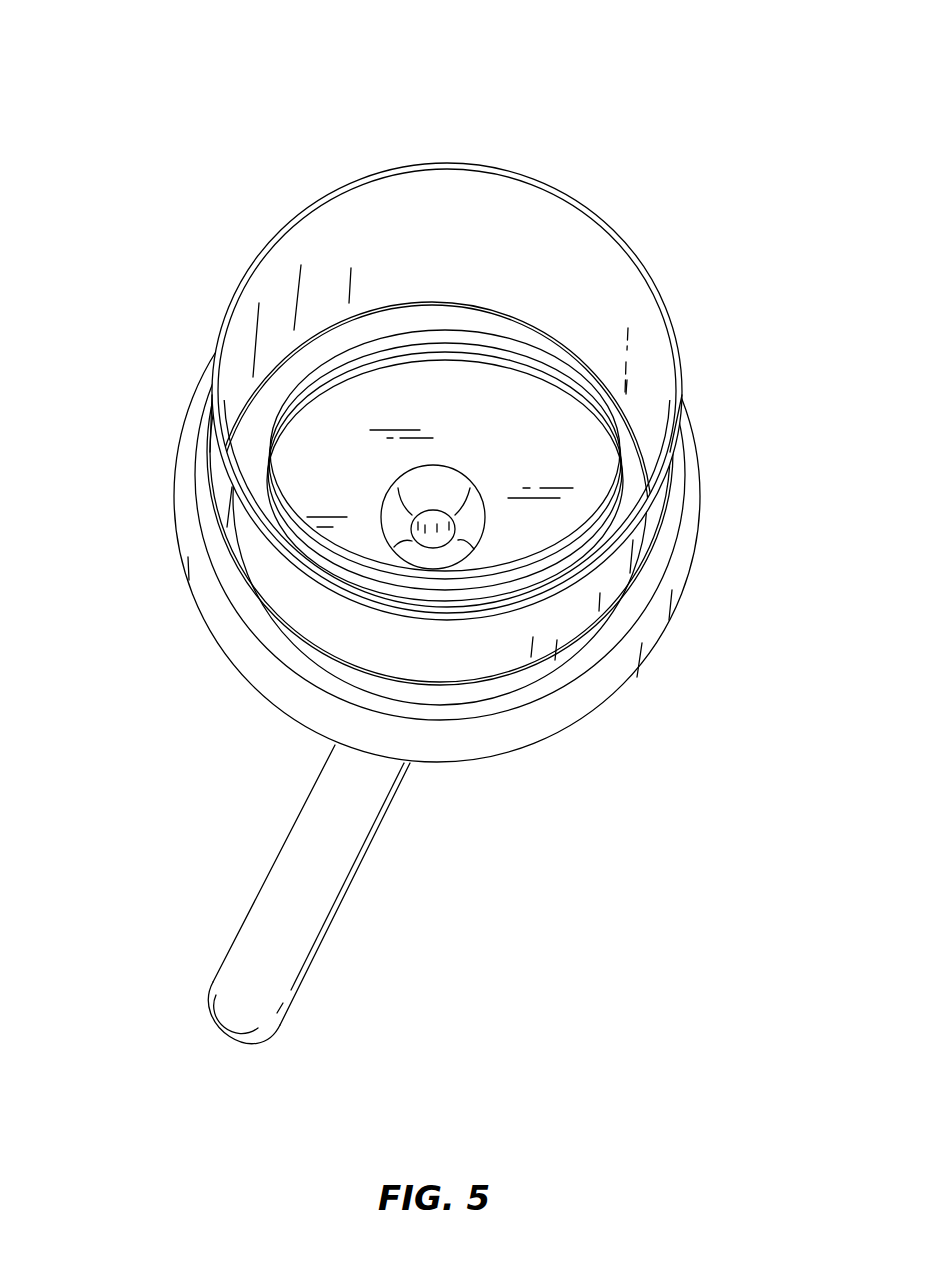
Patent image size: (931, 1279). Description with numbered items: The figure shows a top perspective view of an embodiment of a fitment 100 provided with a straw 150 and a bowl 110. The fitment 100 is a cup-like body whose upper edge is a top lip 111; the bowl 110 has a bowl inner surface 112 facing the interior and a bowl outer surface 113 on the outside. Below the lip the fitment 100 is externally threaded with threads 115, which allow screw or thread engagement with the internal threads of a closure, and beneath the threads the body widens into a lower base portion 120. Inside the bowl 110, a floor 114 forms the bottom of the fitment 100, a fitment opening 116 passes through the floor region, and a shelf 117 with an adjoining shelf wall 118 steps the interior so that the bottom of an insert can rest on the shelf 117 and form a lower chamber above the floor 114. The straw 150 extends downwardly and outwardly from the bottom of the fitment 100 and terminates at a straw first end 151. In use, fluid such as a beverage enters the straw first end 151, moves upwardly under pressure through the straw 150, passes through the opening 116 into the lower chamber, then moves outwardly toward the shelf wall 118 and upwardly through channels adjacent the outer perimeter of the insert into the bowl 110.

The fitment 100 is at (134, 96).
The bowl 110 is at (613, 572).
The top lip 111 is at (562, 198).
The bowl inner surface 112 is at (630, 312).
The bowl outer surface 113 is at (648, 523).
The floor 114 is at (322, 468).
The threads 115 is at (618, 621).
The fitment opening 116 is at (445, 508).
The shelf 117 is at (370, 325).
The shelf wall 118 is at (578, 428).
The base plate 120 is at (568, 708).
The straw 150 is at (344, 862).
The straw first end 151 is at (253, 1040).